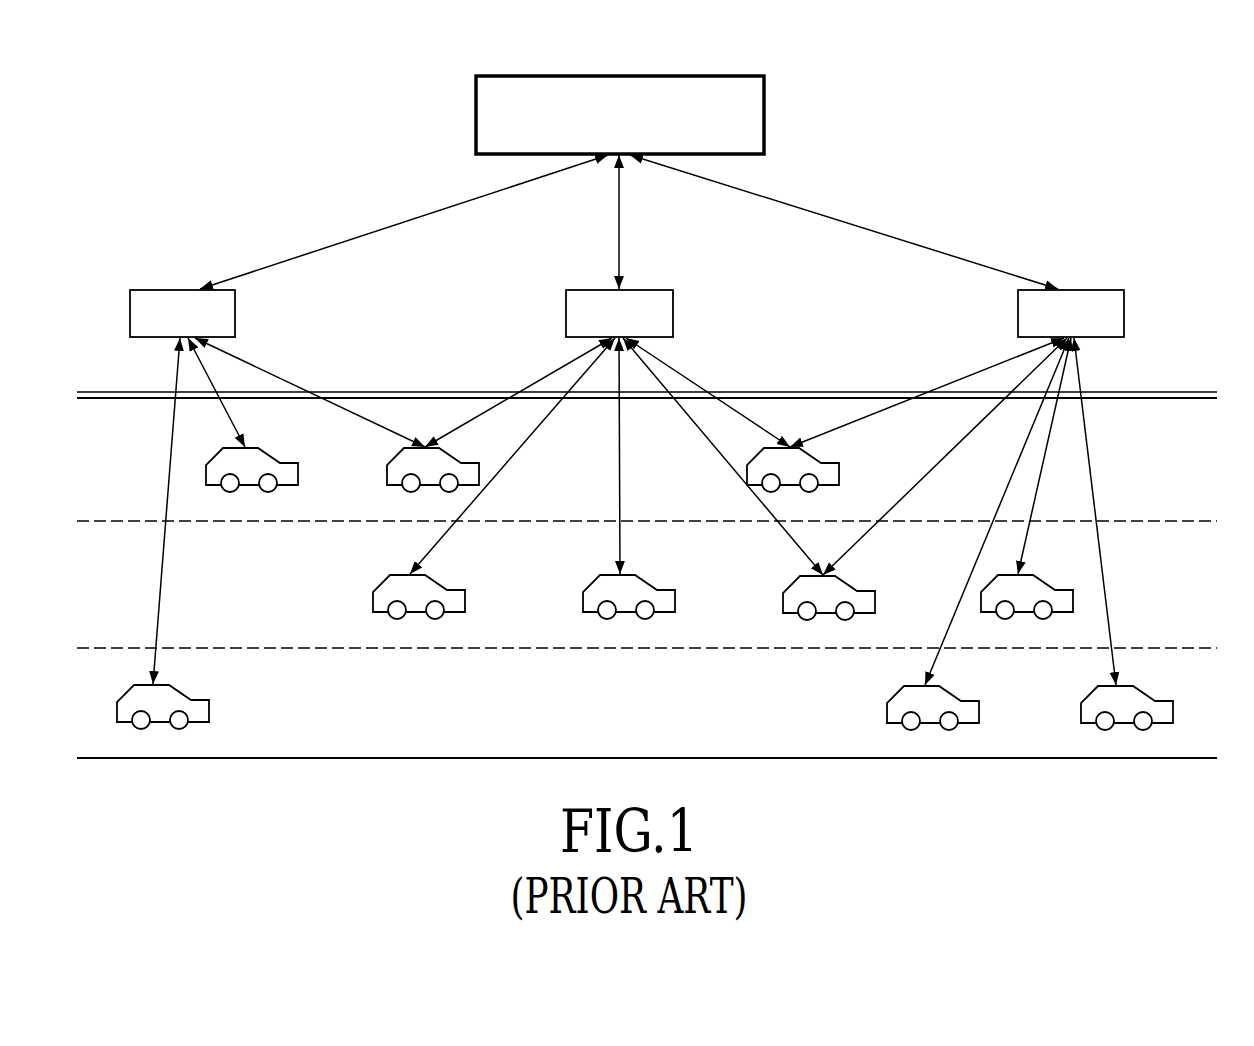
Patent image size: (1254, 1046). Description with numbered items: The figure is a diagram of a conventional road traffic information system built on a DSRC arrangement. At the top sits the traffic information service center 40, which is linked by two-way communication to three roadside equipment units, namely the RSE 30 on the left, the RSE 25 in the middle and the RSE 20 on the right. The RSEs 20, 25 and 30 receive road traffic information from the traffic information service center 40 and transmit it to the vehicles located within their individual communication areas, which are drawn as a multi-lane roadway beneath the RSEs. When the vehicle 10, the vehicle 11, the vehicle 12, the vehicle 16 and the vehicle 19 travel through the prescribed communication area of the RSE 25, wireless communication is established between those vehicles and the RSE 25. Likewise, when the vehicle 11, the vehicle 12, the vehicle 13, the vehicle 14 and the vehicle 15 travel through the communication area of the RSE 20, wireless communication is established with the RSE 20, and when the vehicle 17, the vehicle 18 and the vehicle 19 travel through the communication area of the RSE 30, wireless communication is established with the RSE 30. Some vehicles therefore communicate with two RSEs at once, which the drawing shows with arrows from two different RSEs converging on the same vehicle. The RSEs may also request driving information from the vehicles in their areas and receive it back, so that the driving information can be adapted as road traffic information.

The traffic information service center 40 is at (618, 75).
The RSE 30 is at (182, 313).
The RSE 25 is at (619, 313).
The RSE 20 is at (1071, 313).
The vehicle 10 is at (629, 597).
The vehicle 11 is at (829, 598).
The vehicle 12 is at (793, 470).
The vehicle 13 is at (933, 708).
The vehicle 14 is at (1027, 597).
The vehicle 15 is at (1127, 708).
The vehicle 16 is at (419, 597).
The vehicle 17 is at (163, 707).
The vehicle 18 is at (252, 470).
The vehicle 19 is at (433, 470).